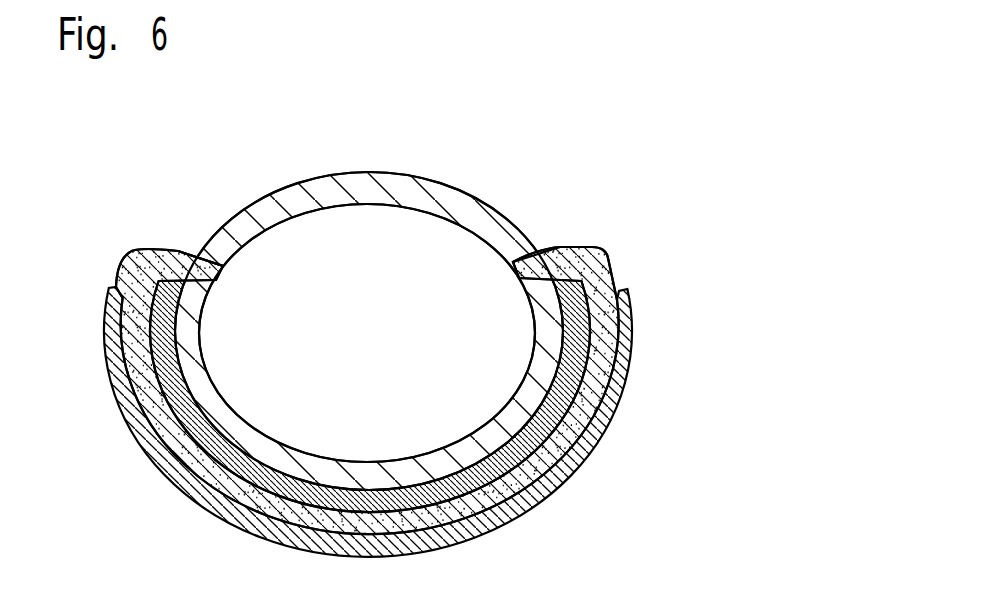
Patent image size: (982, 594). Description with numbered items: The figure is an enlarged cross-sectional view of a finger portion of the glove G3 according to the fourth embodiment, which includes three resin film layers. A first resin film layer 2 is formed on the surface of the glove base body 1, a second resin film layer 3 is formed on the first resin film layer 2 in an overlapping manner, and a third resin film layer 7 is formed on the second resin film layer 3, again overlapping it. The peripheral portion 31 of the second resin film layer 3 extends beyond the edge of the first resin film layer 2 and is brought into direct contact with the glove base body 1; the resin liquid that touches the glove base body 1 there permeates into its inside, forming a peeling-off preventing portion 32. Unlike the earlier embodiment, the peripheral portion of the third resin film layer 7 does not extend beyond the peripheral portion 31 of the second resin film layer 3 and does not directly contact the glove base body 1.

The glove base body 1 is at (370, 178).
The first resin film layer 2 is at (561, 414).
The second resin film layer 3 is at (601, 364).
The third resin film layer 7 is at (145, 447).
The peripheral portion of the second resin film layer 31 is at (152, 250).
The peeling-off preventing portion 32 is at (221, 265).
The glove G3 is at (394, 298).